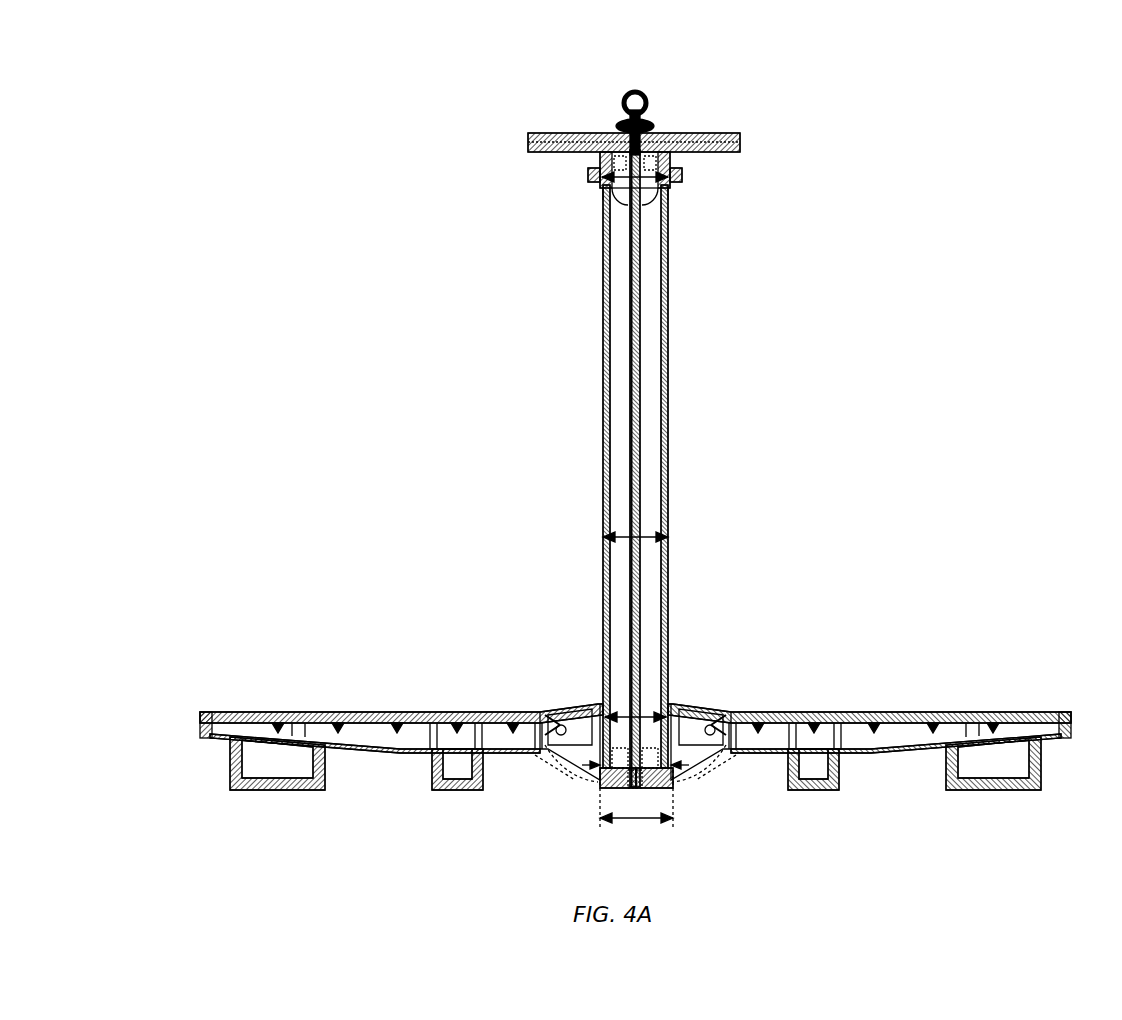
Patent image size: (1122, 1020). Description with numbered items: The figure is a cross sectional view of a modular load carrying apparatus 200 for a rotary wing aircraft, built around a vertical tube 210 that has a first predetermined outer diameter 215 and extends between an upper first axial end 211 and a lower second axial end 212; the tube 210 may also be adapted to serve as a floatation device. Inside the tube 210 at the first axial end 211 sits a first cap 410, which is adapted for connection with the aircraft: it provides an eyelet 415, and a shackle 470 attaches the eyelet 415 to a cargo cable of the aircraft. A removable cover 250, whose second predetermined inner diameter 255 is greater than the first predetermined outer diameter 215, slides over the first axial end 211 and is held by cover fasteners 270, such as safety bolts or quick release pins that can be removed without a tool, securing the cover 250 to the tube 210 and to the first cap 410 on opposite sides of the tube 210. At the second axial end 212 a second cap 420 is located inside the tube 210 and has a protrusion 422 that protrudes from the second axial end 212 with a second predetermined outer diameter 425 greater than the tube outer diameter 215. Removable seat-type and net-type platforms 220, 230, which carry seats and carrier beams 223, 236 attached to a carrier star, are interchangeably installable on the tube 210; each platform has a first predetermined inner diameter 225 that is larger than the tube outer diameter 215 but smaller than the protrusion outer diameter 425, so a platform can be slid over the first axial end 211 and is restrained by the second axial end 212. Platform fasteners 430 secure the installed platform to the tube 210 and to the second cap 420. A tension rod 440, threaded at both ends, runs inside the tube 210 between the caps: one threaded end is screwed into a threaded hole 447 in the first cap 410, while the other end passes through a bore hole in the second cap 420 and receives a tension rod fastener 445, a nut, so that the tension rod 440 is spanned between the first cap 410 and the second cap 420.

The modular load carrying apparatus 200 is at (553, 52).
The tube 210 is at (603, 385).
The first axial end 211 is at (672, 190).
The second axial end 212 is at (598, 697).
The first predetermined outer diameter 215 is at (645, 537).
The left tray / panel support 220, 230 is at (481, 696).
The right tray / panel support 223, 236 is at (985, 712).
The first predetermined inner diameter 225 is at (645, 717).
The removable cover 250 is at (708, 133).
The second predetermined inner diameter 255 is at (620, 163).
The cover fasteners 270 is at (592, 176).
The first cap 410 is at (610, 190).
The eyelet 415 is at (648, 115).
The second cap 420 is at (662, 786).
The protrusion 422 is at (603, 786).
The second predetermined outer diameter 425 is at (638, 820).
The platform fasteners 430 is at (588, 765).
The tension rod 440 is at (636, 471).
The tension rod fastener 445 is at (632, 788).
The threaded hole 447 is at (645, 196).
The shackle 470 is at (620, 122).